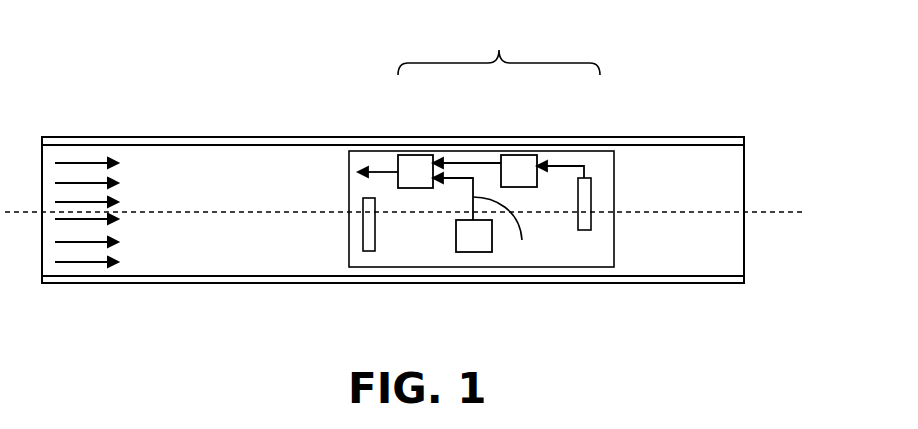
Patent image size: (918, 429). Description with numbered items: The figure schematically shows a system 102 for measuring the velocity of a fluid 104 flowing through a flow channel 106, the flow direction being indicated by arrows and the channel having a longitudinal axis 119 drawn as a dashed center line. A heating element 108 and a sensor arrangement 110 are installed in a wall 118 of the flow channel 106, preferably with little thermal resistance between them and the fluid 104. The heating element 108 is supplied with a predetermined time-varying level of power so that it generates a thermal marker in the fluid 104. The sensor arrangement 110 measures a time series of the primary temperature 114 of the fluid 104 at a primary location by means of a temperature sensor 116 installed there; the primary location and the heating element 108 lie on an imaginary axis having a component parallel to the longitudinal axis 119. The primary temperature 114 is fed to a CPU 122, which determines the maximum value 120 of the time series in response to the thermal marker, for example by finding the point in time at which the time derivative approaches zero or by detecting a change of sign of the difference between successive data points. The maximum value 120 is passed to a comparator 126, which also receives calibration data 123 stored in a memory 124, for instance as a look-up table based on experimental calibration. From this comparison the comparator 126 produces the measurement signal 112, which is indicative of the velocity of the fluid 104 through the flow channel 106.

The system 102 is at (481, 209).
The fluid 104 is at (126, 212).
The flow channel 106 is at (678, 283).
The heating element 108 is at (367, 249).
The sensor arrangement 110 is at (499, 49).
The measurement signal 112 is at (377, 170).
The primary temperature 114 is at (560, 164).
The temperature sensor 116 is at (587, 222).
The wall 118 is at (180, 283).
The longitudinal axis 119 is at (782, 212).
The maximum value 120 is at (468, 162).
The CPU 122 is at (520, 160).
The calibration data 123 is at (522, 240).
The memory 124 is at (473, 243).
The comparator 126 is at (417, 160).